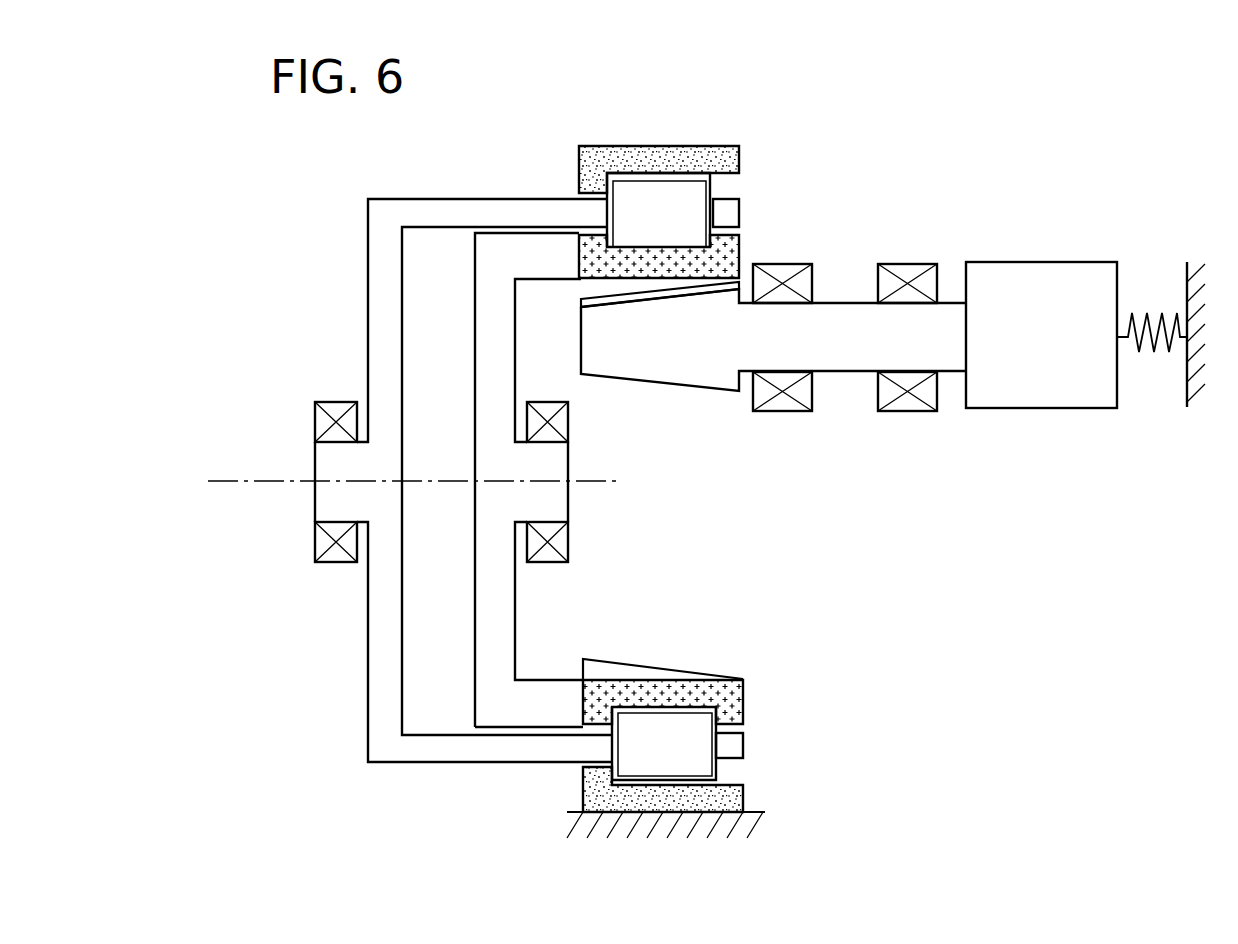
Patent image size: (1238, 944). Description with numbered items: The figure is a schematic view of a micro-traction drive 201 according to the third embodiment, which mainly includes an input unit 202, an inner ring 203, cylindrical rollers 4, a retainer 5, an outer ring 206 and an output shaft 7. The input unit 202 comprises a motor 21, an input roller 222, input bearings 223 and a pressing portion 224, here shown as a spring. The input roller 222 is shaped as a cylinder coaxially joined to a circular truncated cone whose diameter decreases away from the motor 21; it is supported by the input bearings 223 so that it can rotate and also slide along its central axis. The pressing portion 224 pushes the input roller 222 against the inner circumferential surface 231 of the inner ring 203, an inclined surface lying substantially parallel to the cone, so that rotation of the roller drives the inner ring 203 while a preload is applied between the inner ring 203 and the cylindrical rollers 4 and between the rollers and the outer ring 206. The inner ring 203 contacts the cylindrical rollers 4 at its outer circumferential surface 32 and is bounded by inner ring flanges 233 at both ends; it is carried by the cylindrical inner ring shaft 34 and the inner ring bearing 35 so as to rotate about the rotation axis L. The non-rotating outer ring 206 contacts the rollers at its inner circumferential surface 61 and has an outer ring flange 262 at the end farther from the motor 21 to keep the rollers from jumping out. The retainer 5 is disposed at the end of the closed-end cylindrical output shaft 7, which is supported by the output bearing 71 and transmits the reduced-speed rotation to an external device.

The micro-traction drive 201 is at (180, 175).
The output shaft 7 is at (372, 321).
The output bearing 71 is at (315, 543).
The inner ring shaft 34 is at (515, 592).
The inner ring bearing 35 is at (568, 545).
The inner circumferential surface 61 is at (686, 190).
The outer ring flange 262 is at (618, 190).
The outer circumferential surface 32 is at (648, 242).
The inner circumferential surface 231 is at (690, 288).
The input roller 222 is at (670, 378).
The input bearings 223 is at (903, 412).
The motor 21 is at (1043, 262).
The pressing portion 224 is at (1162, 350).
The input unit 202 is at (959, 234).
The inner ring flanges 233 is at (697, 716).
The inner ring 203 is at (753, 680).
The cylindrical rollers 4 is at (710, 761).
The retainer 5 is at (743, 745).
The outer ring 206 is at (765, 803).
The rotation axis L is at (245, 478).